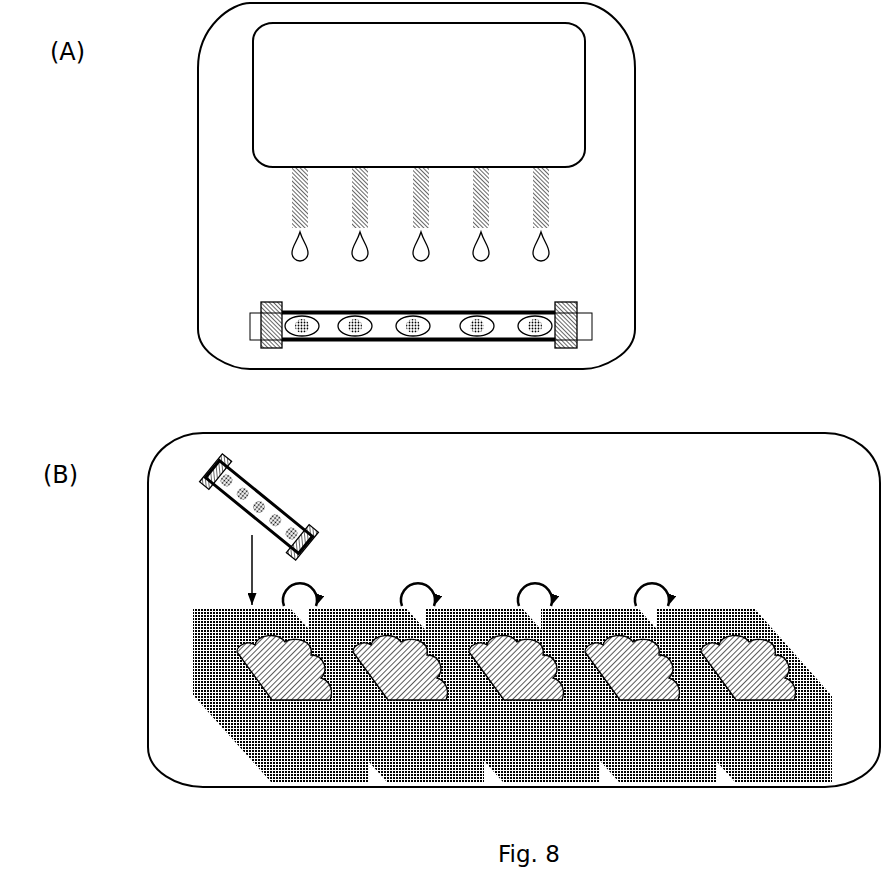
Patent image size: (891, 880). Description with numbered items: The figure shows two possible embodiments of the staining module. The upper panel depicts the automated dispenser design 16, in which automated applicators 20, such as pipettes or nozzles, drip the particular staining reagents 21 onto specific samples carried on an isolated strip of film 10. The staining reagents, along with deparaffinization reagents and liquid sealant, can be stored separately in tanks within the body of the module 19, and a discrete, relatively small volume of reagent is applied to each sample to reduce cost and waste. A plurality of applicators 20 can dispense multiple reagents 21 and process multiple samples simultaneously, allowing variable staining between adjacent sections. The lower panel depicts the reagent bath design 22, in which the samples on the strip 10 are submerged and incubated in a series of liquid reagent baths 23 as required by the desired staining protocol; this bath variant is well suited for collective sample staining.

The strip of film 10 is at (283, 502).
The automated dispenser design 16 is at (180, 170).
The body of the module 19 is at (242, 92).
The automated applicators 20 is at (345, 194).
The staining reagents 21 is at (493, 253).
The reagent bath design 22 is at (137, 658).
The liquid reagent baths 23 is at (413, 737).